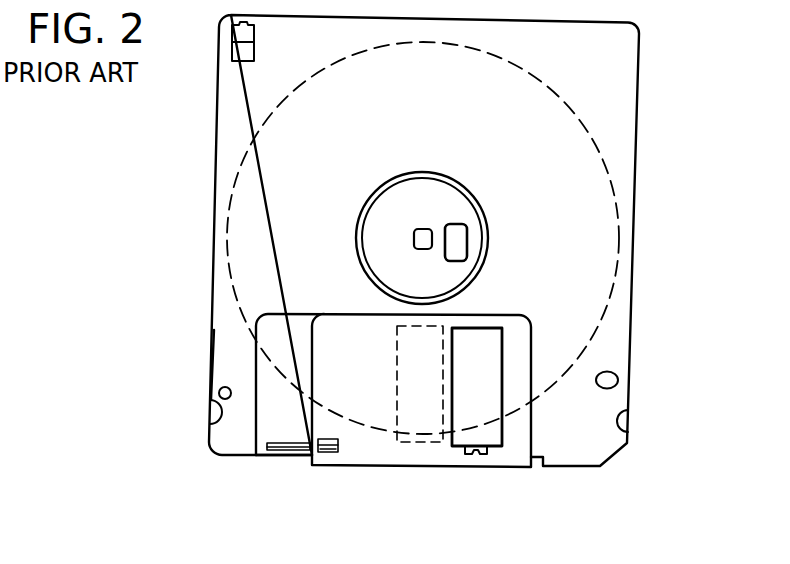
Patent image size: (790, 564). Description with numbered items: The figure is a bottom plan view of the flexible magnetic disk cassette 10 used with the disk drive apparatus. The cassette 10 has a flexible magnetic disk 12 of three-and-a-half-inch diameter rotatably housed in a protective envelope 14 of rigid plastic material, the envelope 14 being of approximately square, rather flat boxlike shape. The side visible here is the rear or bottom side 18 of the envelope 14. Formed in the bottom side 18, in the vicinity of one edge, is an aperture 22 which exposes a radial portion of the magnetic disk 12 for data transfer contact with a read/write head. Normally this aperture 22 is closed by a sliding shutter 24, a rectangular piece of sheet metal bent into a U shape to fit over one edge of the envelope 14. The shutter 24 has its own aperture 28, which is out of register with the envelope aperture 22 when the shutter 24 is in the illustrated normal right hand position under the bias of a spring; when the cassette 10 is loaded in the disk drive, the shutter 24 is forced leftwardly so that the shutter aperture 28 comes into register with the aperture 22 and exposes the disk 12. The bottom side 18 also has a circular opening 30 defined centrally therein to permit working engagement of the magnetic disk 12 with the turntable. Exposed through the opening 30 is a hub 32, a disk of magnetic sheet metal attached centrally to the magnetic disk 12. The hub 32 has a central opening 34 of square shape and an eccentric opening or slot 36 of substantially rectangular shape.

The disk cassette 10 is at (668, 46).
The flexible magnetic disk 12 is at (616, 252).
The protective envelope 14 is at (634, 226).
The bottom side 18 is at (212, 345).
The aperture 22 is at (397, 333).
The sliding shutter 24 is at (380, 462).
The shutter aperture 28 is at (502, 358).
The circular opening 30 is at (360, 222).
The hub 32 is at (413, 188).
The central opening 34 is at (417, 230).
The eccentric opening 36 is at (461, 256).